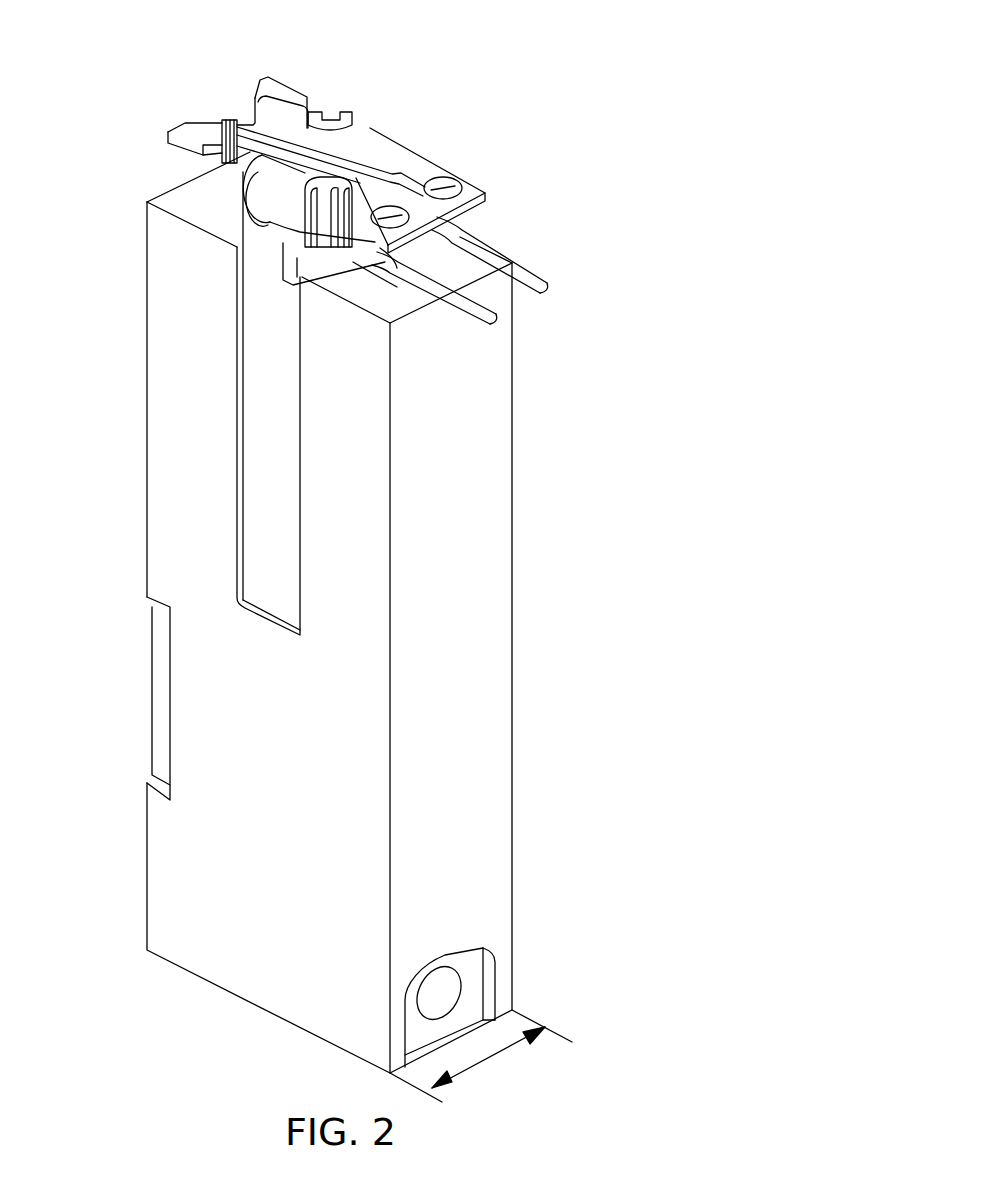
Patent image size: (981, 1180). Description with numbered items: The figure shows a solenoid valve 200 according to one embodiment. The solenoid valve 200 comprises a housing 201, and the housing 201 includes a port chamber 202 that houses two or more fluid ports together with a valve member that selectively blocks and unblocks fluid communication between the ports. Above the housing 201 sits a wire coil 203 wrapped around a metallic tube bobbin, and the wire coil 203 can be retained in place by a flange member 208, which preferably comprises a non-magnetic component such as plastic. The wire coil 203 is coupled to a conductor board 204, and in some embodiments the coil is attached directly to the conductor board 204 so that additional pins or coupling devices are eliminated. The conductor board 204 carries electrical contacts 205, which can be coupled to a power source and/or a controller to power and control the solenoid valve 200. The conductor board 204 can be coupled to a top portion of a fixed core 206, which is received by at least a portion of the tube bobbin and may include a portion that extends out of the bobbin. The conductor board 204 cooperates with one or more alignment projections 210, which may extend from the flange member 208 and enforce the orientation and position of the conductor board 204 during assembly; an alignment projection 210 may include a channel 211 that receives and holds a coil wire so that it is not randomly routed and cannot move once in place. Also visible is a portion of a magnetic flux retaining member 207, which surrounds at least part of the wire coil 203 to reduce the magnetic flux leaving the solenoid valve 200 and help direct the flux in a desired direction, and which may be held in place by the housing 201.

The solenoid valve 200 is at (597, 104).
The housing 201 is at (512, 583).
The port chamber 202 is at (147, 716).
The wire coil 203 is at (398, 298).
The conductor board 204 is at (418, 150).
The electrical contacts 205 is at (548, 284).
The fixed core 206 is at (292, 219).
The magnetic flux retaining member 207 is at (260, 324).
The flange member 208 is at (287, 241).
The alignment projections 210 is at (352, 122).
The channel 211 is at (331, 110).